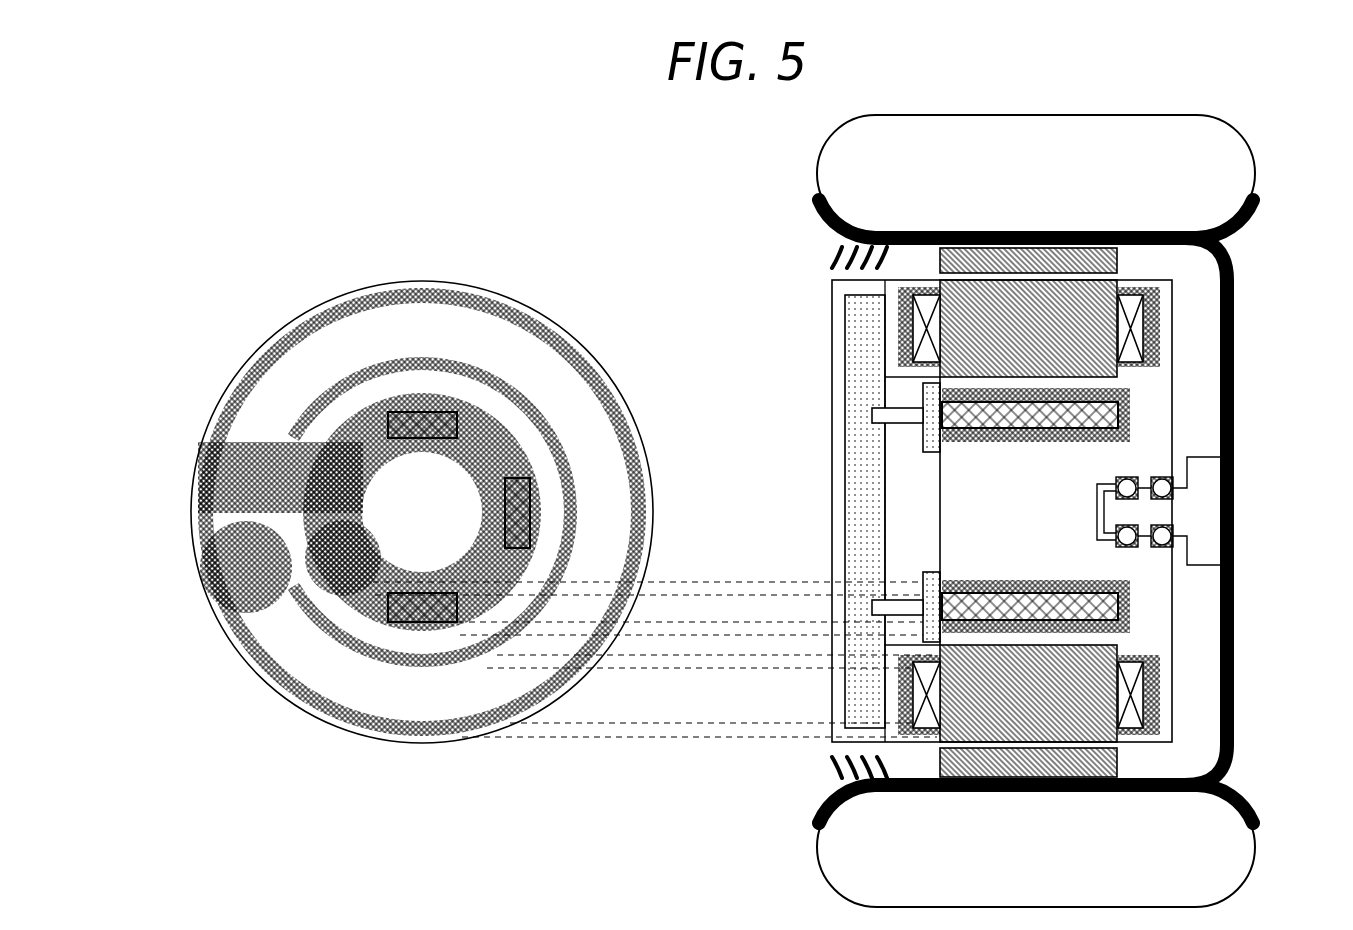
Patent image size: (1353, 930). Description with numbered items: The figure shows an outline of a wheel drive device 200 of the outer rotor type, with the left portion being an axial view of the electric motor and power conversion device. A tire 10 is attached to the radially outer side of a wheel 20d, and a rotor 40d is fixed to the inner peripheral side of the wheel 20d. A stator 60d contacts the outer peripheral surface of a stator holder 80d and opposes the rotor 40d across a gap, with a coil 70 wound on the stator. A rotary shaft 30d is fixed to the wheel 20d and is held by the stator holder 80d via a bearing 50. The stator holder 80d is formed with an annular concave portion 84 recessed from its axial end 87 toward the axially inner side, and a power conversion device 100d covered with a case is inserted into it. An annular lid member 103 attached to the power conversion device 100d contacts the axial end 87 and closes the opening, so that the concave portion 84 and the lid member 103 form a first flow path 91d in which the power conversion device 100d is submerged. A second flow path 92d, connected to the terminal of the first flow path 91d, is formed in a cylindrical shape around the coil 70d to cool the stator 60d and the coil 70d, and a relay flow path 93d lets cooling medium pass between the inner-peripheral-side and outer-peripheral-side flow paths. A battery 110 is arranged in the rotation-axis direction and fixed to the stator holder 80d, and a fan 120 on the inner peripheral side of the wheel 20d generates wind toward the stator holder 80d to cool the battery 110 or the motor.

The wheel drive device 200 is at (701, 145).
The tire 10 is at (1250, 150).
The wheel 20d is at (1235, 330).
The fan 120 is at (830, 255).
The battery 110 is at (845, 338).
The power conversion device 100d is at (518, 497).
The lid member 103 is at (923, 438).
The first flow path 91d is at (484, 430).
The second flow path 92d is at (437, 292).
The relay flow path 93d is at (250, 456).
The concave portion 84 is at (1130, 412).
The axial end 87 is at (940, 523).
The bearing 50 is at (1162, 488).
The rotary shaft 30d is at (1207, 520).
The stator holder 80d is at (333, 742).
The stator 60d is at (1102, 658).
The coil 70 is at (513, 340).
The coil 70d is at (1132, 708).
The rotor 40d is at (1112, 760).